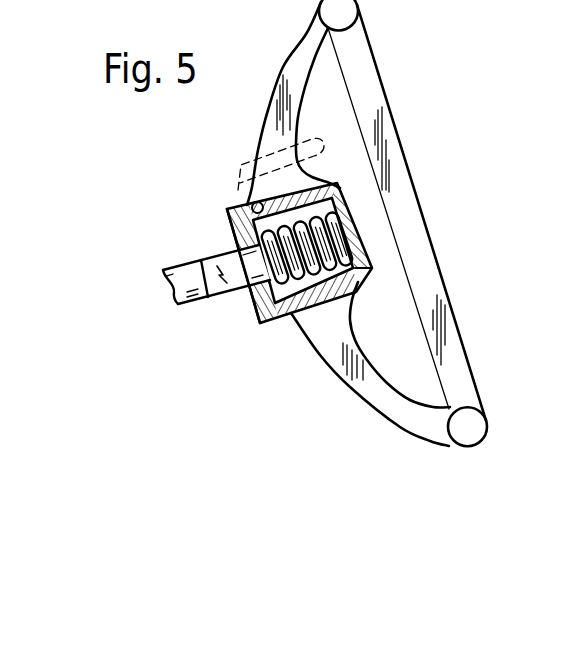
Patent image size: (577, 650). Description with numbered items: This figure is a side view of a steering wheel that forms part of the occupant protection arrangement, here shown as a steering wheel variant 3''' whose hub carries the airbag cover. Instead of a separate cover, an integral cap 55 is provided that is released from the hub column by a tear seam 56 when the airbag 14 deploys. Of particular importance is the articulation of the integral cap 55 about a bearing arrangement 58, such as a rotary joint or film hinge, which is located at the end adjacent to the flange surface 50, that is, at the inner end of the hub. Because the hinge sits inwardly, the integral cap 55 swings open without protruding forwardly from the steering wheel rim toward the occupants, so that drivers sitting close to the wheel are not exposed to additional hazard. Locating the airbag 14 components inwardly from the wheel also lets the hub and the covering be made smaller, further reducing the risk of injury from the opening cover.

The pedal lever 3''' is at (369, 223).
The airbag 14 is at (270, 322).
The flange surface 50 is at (236, 250).
The integral cap 55 is at (333, 195).
The tear seam 56 is at (367, 280).
The bearing arrangement 58 is at (252, 204).